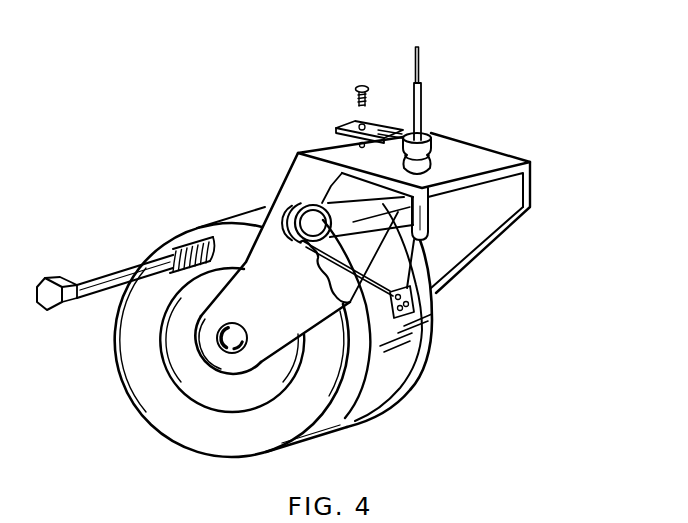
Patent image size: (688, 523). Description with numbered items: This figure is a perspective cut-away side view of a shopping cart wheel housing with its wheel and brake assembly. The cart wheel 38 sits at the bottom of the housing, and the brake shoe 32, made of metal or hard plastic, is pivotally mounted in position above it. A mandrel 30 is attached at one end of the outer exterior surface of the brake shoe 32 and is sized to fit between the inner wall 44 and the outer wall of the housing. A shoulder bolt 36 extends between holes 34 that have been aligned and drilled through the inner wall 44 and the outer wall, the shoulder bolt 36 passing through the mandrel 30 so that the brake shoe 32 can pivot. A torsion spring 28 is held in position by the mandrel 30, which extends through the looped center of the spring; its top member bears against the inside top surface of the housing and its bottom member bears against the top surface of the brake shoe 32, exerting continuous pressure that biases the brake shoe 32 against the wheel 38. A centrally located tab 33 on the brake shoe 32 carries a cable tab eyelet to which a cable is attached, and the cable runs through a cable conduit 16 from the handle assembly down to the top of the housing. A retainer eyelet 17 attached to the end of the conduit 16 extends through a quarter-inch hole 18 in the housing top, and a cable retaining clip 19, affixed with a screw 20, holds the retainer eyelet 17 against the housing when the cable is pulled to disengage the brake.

The cable conduit 16 is at (423, 90).
The retainer eyelet 17 is at (433, 152).
The hole 18 is at (425, 161).
The cable retaining clip 19 is at (348, 120).
The screw 20 is at (366, 82).
The torsion spring 28 is at (337, 198).
The mandrel 30 is at (292, 212).
The brake shoe 32 is at (413, 318).
The tab 33 is at (433, 292).
The holes 34 is at (283, 220).
The shoulder bolt 36 is at (107, 284).
The cart wheel 38 is at (148, 387).
The inner wall 44 is at (490, 208).